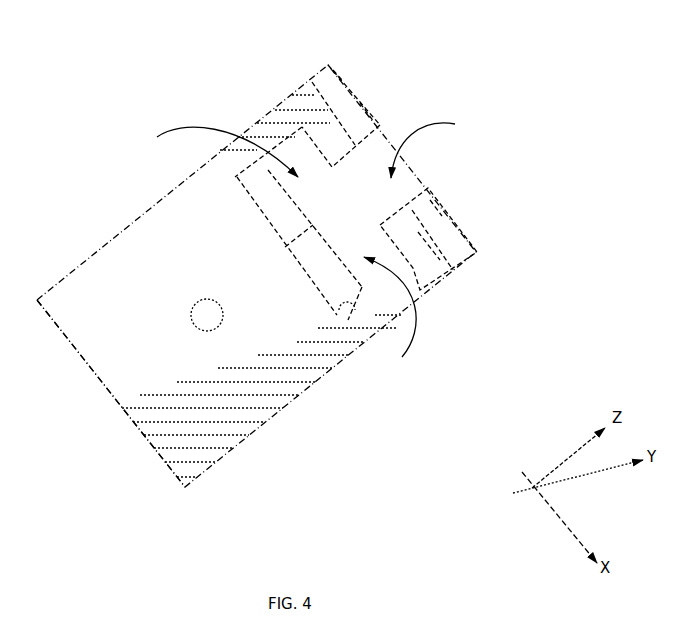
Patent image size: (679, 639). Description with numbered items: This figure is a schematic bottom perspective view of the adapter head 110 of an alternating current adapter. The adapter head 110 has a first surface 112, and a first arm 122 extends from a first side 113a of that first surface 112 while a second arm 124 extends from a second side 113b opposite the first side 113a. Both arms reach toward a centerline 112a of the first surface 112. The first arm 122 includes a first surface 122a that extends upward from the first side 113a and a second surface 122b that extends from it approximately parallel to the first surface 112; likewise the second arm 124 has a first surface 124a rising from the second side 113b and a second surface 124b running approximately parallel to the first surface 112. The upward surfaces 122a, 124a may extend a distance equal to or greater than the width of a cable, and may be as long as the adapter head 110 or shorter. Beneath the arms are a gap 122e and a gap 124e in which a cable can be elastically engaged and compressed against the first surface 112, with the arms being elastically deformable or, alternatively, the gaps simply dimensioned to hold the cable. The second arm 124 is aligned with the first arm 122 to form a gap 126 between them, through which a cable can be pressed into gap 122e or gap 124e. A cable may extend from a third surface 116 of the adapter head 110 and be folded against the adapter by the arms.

The adapter head 110 is at (500, 63).
The first surface 112 is at (282, 218).
The centerline 112a is at (285, 250).
The first side 113a is at (237, 178).
The second side 113b is at (337, 315).
The third surface 116 is at (164, 430).
The first arm 122 is at (333, 82).
The first surface of first arm 122a is at (258, 132).
The second surface of first arm 122b is at (358, 116).
The gap 122e is at (204, 152).
The second arm 124 is at (465, 233).
The first surface of second arm 124a is at (437, 292).
The second surface of second arm 124b is at (426, 204).
The gap 124e is at (396, 321).
The gap 126 is at (440, 145).